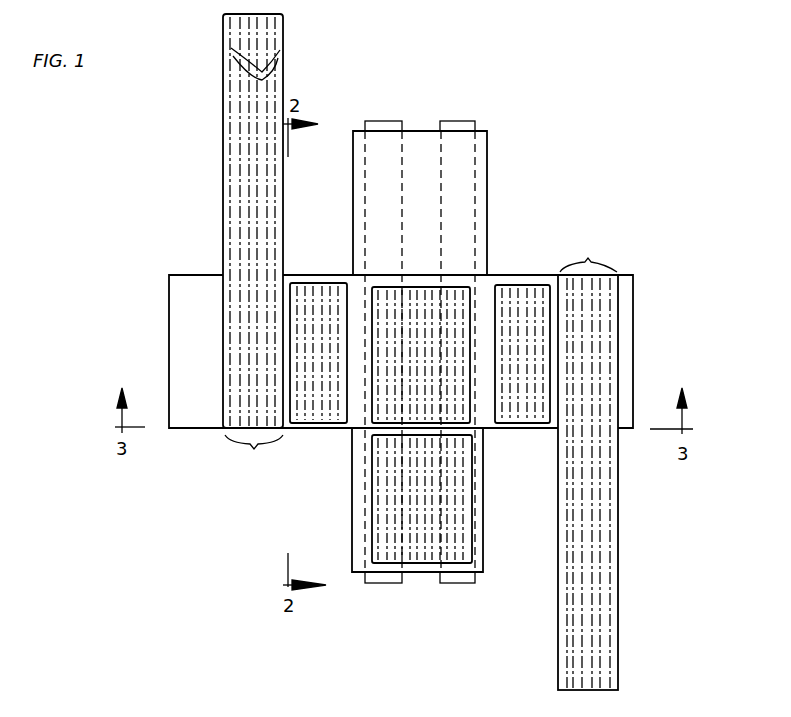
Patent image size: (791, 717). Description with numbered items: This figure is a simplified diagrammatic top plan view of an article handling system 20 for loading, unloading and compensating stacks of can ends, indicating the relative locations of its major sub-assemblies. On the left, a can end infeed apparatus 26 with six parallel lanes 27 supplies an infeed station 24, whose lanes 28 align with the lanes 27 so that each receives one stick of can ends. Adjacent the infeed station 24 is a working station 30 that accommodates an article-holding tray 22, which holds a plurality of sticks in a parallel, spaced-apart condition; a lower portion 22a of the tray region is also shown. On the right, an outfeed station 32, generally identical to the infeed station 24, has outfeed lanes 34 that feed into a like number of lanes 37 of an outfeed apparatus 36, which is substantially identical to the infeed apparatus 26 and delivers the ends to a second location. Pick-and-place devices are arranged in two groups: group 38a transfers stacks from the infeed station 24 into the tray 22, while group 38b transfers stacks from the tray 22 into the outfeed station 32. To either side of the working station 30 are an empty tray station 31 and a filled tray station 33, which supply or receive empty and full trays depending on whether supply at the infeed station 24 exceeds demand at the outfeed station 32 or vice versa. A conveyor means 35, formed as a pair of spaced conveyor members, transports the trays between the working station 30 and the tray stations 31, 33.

The article handling system 20 is at (263, 490).
The article-holding tray 22 is at (378, 403).
The lower body portion 22a is at (375, 527).
The infeed station 24 is at (208, 328).
The can end infeed apparatus 26 is at (216, 158).
The parallel lanes 27 is at (231, 50).
The lanes 28 is at (254, 454).
The working station 30 is at (485, 410).
The empty tray station 31 is at (375, 590).
The outfeed station 32 is at (628, 337).
The filled tray station 33 is at (504, 156).
The outfeed lanes 34 is at (588, 253).
The conveyor means 35 is at (450, 122).
The outfeed apparatus 36 is at (626, 600).
The lanes 37 is at (583, 533).
The first group of pick-and-place devices 38a is at (330, 246).
The second group of pick-and-place devices 38b is at (537, 248).